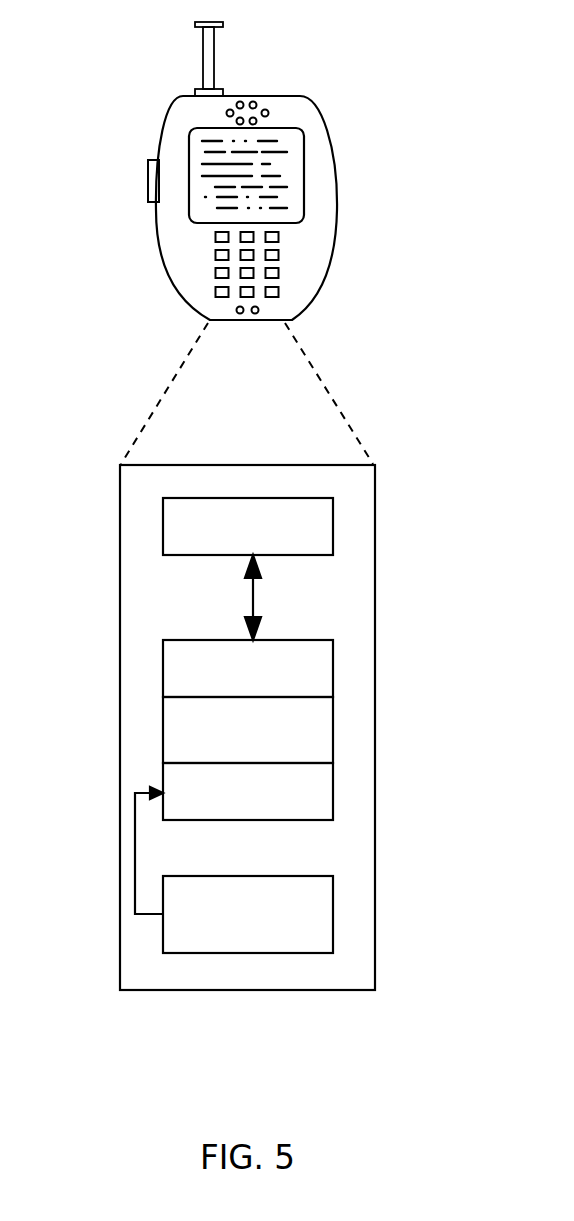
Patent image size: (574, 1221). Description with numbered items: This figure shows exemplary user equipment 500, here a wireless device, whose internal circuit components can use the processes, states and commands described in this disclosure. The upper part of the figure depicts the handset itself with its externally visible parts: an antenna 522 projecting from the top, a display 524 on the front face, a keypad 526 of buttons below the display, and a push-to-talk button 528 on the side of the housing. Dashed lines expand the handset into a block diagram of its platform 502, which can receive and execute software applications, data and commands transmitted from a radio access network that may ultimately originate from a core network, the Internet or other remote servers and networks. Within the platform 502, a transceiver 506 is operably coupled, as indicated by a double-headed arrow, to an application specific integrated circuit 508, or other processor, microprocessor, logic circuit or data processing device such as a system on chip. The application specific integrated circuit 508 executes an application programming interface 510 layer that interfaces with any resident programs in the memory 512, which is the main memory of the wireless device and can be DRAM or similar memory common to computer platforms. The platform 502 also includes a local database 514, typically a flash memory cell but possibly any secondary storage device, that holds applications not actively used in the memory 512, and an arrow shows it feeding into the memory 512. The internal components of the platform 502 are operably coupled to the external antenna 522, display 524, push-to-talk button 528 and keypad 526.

The user equipment 500 is at (313, 299).
The platform 502 is at (120, 572).
The transceiver 506 is at (333, 522).
The application specific integrated circuit 508 is at (333, 667).
The application programming interface 510 is at (333, 727).
The memory 512 is at (333, 792).
The local database 514 is at (333, 912).
The antenna 522 is at (214, 44).
The display 524 is at (304, 175).
The keypad 526 is at (279, 255).
The push-to-talk button 528 is at (147, 183).